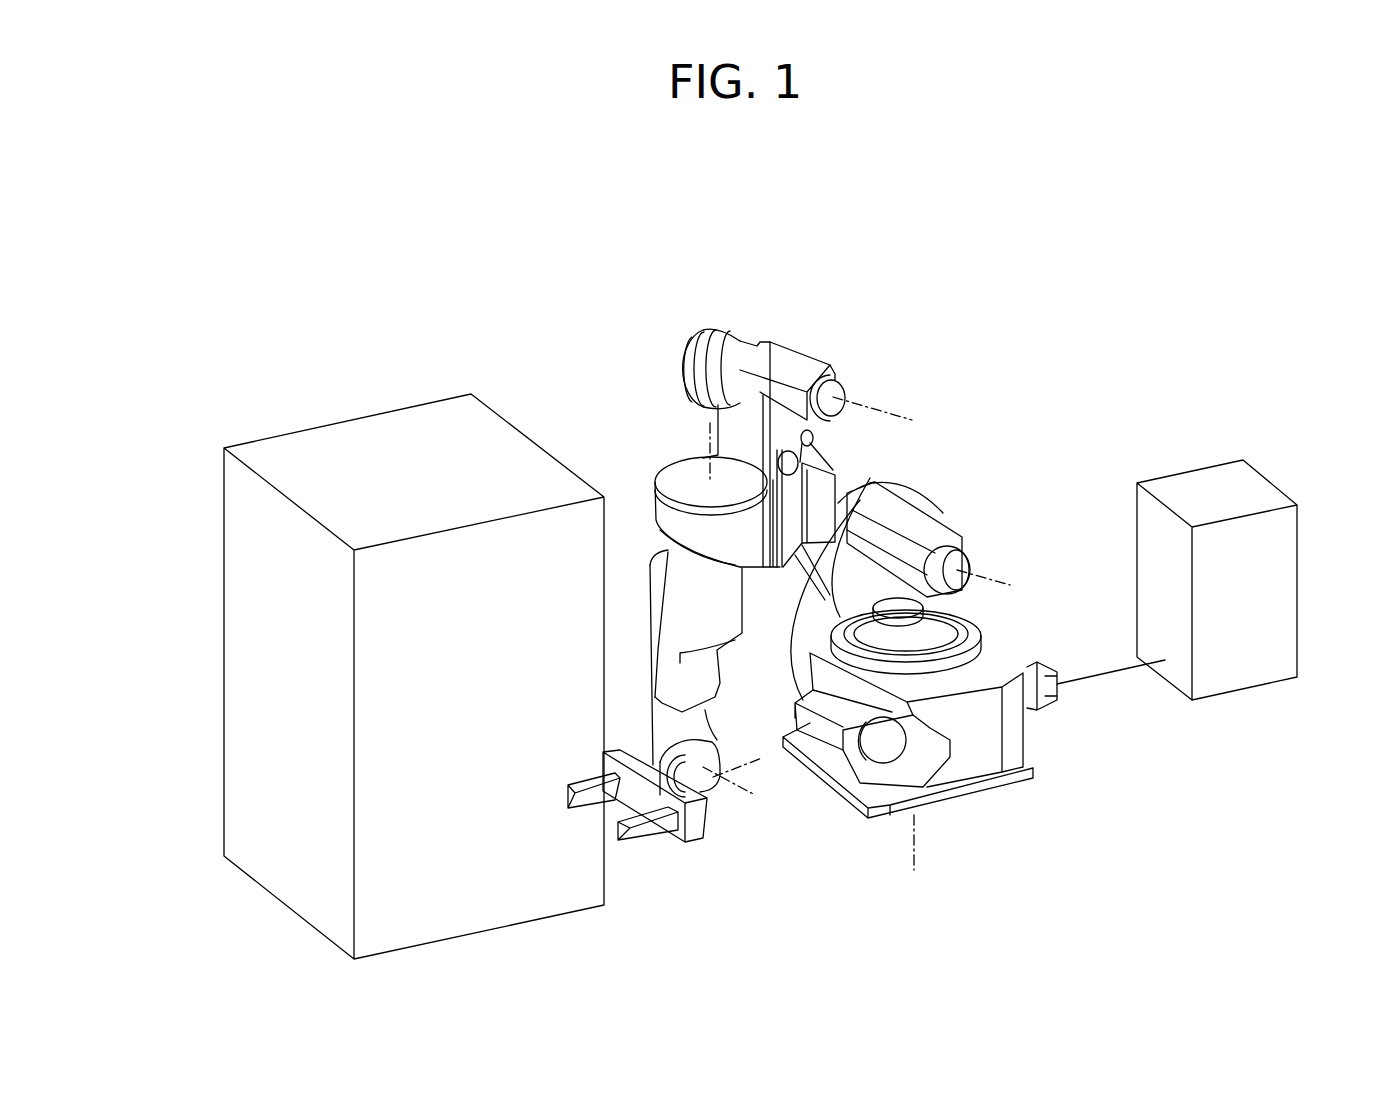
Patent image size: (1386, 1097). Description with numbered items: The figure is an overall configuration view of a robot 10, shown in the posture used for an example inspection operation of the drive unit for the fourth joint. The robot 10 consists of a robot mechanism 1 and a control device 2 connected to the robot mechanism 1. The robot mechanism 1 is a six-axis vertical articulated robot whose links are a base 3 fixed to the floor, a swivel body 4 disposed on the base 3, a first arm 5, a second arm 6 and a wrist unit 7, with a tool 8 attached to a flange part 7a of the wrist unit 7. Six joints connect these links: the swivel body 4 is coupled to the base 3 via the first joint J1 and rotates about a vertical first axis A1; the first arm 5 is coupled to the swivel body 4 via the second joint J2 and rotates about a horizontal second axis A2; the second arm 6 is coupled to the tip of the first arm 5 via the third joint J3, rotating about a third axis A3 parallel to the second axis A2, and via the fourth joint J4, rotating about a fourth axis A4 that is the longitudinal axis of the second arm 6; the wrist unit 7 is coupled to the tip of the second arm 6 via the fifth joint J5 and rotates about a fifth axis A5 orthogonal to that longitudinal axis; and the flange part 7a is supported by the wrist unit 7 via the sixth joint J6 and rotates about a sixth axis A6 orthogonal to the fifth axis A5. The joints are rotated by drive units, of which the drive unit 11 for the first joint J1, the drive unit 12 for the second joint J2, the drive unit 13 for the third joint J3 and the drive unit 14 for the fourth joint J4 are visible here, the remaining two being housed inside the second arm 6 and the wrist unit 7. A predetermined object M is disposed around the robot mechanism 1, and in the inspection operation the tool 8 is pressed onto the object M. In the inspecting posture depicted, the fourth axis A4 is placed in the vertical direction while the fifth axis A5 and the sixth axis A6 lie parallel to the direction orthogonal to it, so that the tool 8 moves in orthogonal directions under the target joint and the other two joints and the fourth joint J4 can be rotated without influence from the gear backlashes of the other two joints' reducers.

The robot 10 is at (1159, 222).
The robot mechanism 1 is at (1046, 385).
The control device 2 is at (1199, 487).
The base 3 is at (1035, 742).
The swivel body 4 is at (977, 617).
The first arm 5 is at (820, 457).
The second arm 6 is at (655, 617).
The wrist unit 7 is at (713, 807).
The flange part 7a is at (673, 765).
The tool 8 is at (673, 840).
The drive unit 11 is at (825, 730).
The drive unit 12 is at (923, 527).
The drive unit 13 is at (783, 360).
The drive unit 14 is at (655, 497).
The object M is at (222, 650).
The first joint J1 is at (1005, 632).
The second joint J2 is at (945, 470).
The third joint J3 is at (840, 360).
The fourth joint J4 is at (652, 448).
The fifth joint J5 is at (722, 745).
The sixth joint J6 is at (725, 805).
The first axis A1 is at (913, 862).
The second axis A2 is at (993, 570).
The third axis A3 is at (884, 402).
The fourth axis A4 is at (692, 447).
The fifth axis A5 is at (747, 793).
The sixth axis A6 is at (745, 750).